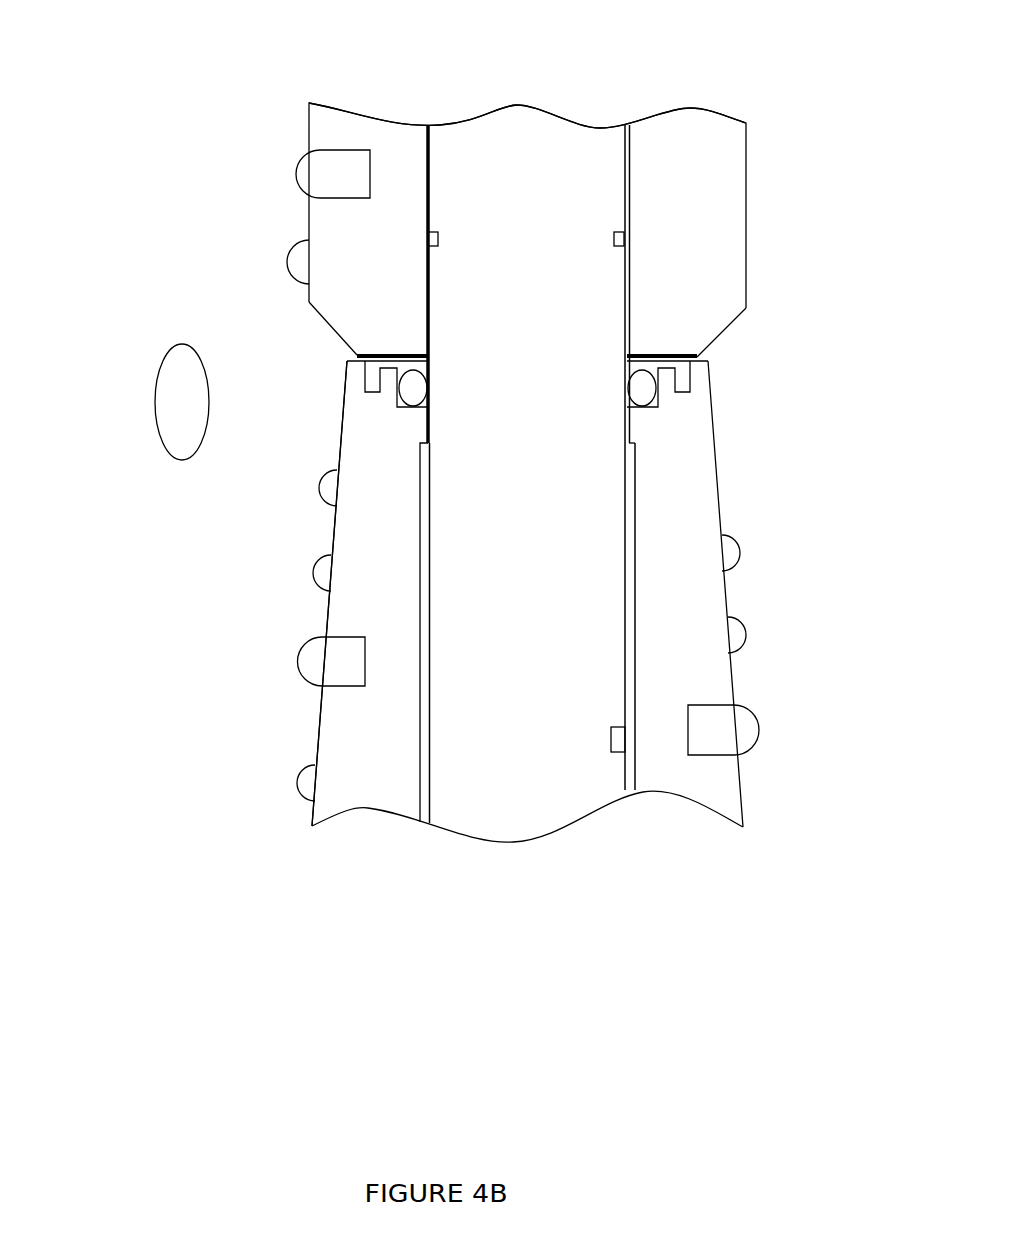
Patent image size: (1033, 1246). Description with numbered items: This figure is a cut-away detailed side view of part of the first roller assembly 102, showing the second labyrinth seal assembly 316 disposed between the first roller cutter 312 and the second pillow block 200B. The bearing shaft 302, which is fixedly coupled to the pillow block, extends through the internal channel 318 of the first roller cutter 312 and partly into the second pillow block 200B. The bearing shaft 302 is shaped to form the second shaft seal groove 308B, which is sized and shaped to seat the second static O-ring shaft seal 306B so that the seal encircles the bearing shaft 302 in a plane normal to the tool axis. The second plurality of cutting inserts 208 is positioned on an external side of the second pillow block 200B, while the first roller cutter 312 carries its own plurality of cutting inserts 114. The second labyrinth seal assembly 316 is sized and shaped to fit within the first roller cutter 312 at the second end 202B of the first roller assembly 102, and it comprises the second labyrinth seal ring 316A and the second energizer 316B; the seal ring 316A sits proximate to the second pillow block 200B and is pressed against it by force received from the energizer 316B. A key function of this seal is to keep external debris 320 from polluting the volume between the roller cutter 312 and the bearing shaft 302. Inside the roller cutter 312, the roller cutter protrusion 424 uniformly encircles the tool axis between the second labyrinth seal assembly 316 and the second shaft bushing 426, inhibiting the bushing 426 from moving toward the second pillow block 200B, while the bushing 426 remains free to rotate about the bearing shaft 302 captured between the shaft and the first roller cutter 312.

The second pillow block 200B is at (317, 130).
The bearing shaft 302 is at (457, 113).
The second plurality of cutting inserts 208 is at (303, 243).
The internal channel 318 is at (635, 162).
The second static O-ring shaft seal 306B is at (428, 232).
The second shaft seal groove 308B is at (628, 237).
The second end 202B is at (710, 362).
The first roller cutter 312 is at (325, 727).
The plurality of cutting inserts 114 is at (305, 663).
The second labyrinth seal assembly 316 is at (245, 360).
The second labyrinth seal ring 316A is at (382, 397).
The second energizer 316B is at (645, 387).
The external debris 320 is at (155, 402).
The roller cutter protrusion 424 is at (432, 428).
The second shaft bushing 426 is at (432, 547).
The first roller assembly 102 is at (168, 939).